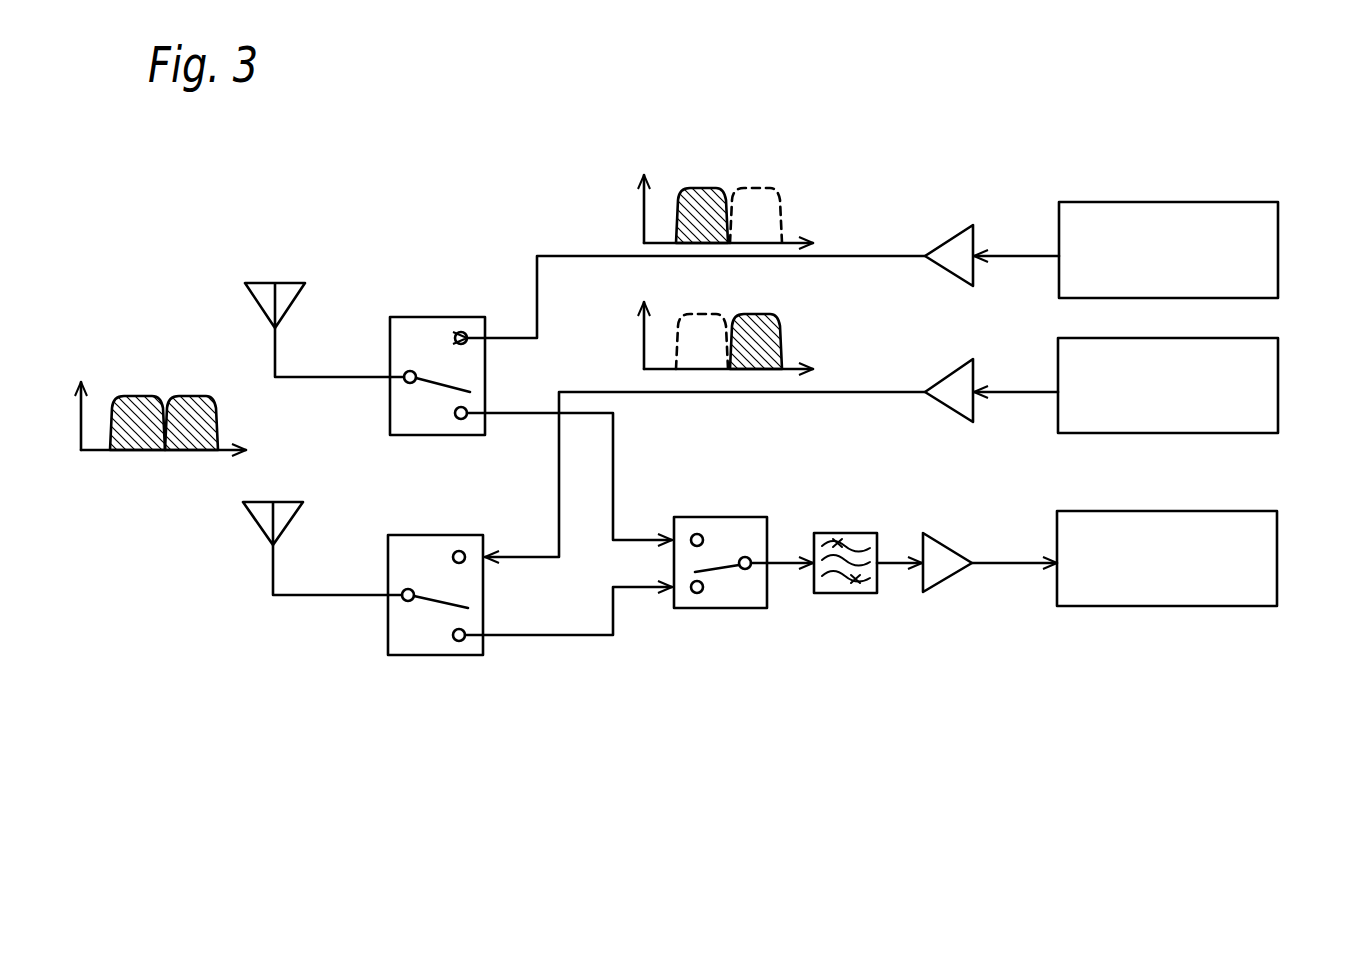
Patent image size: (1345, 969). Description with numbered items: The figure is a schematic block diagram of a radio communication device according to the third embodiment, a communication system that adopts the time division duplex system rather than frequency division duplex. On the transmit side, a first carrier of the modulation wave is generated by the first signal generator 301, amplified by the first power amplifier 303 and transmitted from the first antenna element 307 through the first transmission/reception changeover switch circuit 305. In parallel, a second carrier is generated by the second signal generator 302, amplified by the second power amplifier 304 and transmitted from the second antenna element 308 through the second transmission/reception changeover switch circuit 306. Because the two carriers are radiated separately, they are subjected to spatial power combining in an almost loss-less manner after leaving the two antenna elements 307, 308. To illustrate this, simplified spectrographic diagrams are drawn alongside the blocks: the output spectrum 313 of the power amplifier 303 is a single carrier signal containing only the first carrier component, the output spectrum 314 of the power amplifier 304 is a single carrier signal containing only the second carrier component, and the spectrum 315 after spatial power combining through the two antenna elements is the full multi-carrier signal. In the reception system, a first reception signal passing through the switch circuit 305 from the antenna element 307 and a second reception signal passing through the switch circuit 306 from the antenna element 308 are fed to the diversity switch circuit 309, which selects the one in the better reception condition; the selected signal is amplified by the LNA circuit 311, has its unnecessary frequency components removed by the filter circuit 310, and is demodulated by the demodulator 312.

The first signal generator 301 is at (1160, 202).
The second signal generator 302 is at (1182, 433).
The first power amplifier 303 is at (957, 225).
The second power amplifier 304 is at (958, 418).
The first transmission/reception changeover switch circuit 305 is at (430, 317).
The second transmission/reception changeover switch circuit 306 is at (428, 658).
The first antenna element 307 is at (263, 282).
The second antenna element 308 is at (257, 527).
The diversity switch circuit 309 is at (715, 610).
The filter circuit 310 is at (843, 597).
The LNA circuit 311 is at (953, 582).
The demodulator 312 is at (1155, 607).
The output spectrum of the first power amplifier 313 is at (644, 213).
The output spectrum of the second power amplifier 314 is at (644, 338).
The spectrum after spatial power combining 315 is at (80, 407).